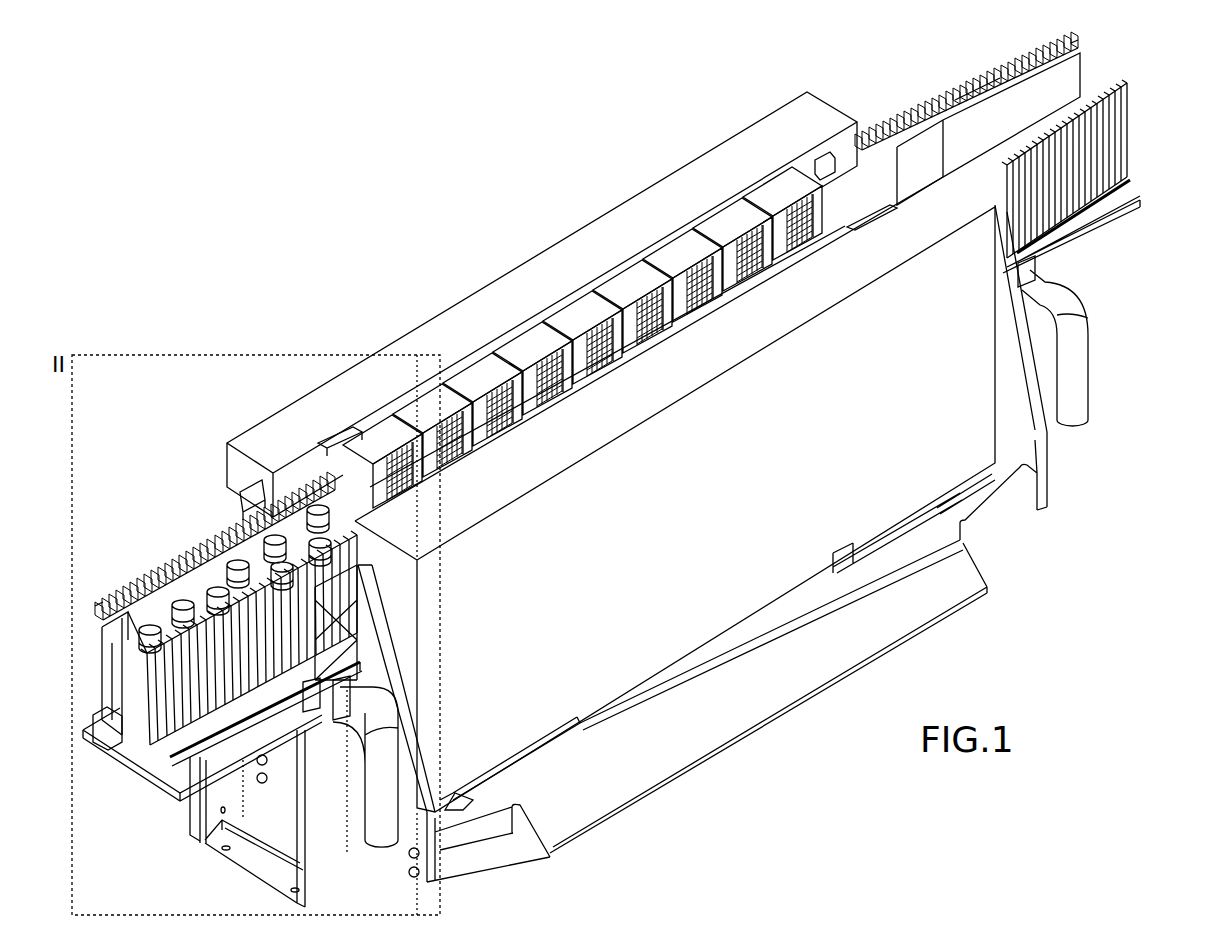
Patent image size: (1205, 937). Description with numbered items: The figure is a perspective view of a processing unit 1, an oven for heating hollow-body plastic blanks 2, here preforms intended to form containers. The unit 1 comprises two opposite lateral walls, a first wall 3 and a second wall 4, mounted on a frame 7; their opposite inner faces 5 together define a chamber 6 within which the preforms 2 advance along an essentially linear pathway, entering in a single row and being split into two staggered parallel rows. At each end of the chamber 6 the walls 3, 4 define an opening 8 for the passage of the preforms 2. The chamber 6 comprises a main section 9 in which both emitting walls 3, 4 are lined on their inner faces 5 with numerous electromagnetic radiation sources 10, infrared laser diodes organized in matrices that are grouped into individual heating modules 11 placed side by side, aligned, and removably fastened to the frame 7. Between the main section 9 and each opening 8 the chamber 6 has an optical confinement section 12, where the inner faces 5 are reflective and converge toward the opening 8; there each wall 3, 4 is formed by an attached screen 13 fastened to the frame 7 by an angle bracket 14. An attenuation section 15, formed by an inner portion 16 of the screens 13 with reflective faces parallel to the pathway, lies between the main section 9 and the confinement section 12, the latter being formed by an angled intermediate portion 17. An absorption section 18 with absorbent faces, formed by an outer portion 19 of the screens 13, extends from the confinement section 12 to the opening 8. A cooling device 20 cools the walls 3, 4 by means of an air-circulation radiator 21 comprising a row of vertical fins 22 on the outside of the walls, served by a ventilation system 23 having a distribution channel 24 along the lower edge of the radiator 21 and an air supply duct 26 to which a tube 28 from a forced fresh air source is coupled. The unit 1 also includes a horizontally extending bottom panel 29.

The processing unit 1 is at (405, 270).
The blanks 2 is at (140, 593).
The first wall 3 is at (555, 262).
The second wall 4 is at (708, 362).
The inner faces 5 is at (530, 400).
The chamber 6 is at (355, 505).
The frame 7 is at (400, 857).
The opening 8 is at (140, 733).
The main section 9 is at (552, 338).
The electromagnetic radiation sources 10 is at (613, 362).
The heating modules 11 is at (647, 273).
The optical confinement section 12 is at (197, 550).
The screen 13 is at (110, 693).
The angle bracket 14 is at (370, 623).
The attenuation section 15 is at (292, 505).
The inner portion 16 is at (835, 172).
The intermediate portion 17 is at (997, 75).
The absorption section 18 is at (130, 613).
The outer portion 19 is at (147, 653).
The cooling device 20 is at (378, 683).
The radiator 21 is at (168, 772).
The fins 22 is at (227, 530).
The ventilation system 23 is at (402, 737).
The distribution channel 24 is at (187, 760).
The air supply duct 26 is at (317, 703).
The tube 28 is at (377, 810).
The bottom panel 29 is at (168, 793).